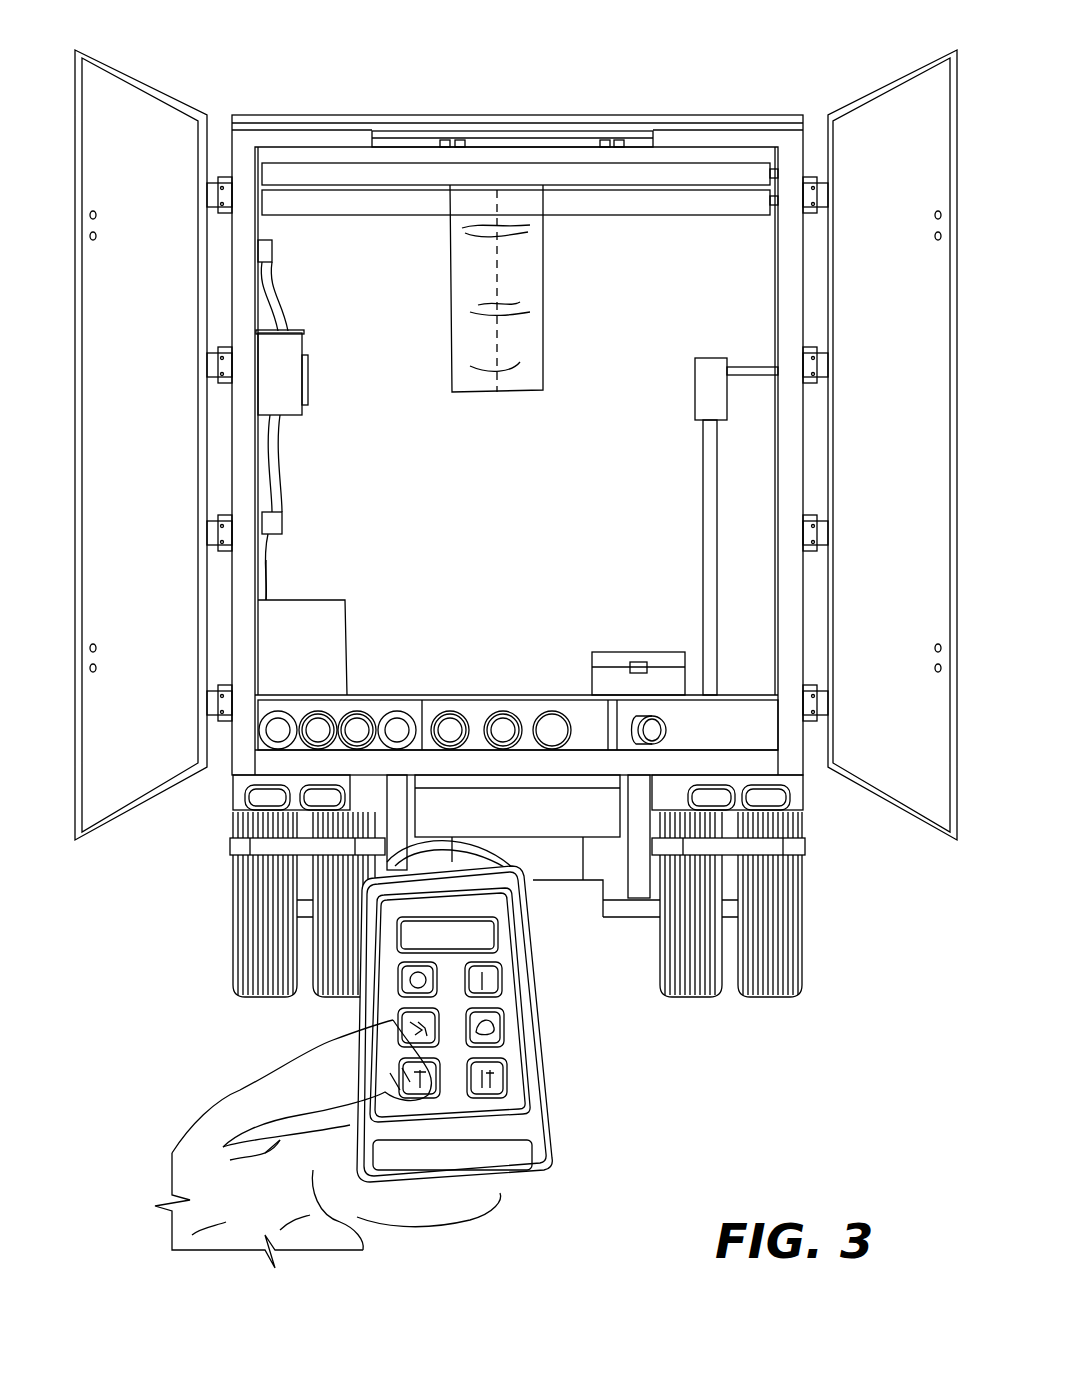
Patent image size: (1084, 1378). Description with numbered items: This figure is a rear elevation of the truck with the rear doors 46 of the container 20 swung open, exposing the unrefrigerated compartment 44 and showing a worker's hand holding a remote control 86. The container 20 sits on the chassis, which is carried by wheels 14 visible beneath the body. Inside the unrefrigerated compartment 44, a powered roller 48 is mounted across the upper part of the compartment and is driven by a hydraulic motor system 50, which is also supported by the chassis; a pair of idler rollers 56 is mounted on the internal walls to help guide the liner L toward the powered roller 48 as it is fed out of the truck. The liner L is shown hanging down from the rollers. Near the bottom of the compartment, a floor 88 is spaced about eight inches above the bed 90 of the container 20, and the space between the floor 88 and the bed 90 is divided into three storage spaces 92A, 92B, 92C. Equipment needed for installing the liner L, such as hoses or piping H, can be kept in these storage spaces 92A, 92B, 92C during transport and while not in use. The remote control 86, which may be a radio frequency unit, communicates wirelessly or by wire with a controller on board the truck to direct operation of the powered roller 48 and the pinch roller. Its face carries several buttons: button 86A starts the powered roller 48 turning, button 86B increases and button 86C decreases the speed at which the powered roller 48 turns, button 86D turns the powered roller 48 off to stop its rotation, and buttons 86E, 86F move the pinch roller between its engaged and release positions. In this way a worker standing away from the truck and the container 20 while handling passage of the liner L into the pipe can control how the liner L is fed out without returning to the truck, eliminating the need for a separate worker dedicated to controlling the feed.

The wheels 14 is at (320, 884).
The container 20 is at (443, 116).
The unrefrigerated compartment 44 is at (705, 256).
The rear doors 46 is at (878, 112).
The powered roller 48 is at (600, 218).
The hydraulic motor system 50 is at (396, 338).
The idler rollers 56 is at (340, 172).
The remote control 86 is at (425, 1079).
The button 86A is at (416, 977).
The button 86B is at (418, 1026).
The button 86C is at (500, 1016).
The button 86D is at (427, 1085).
The button 86E is at (497, 1092).
The button 86F is at (493, 968).
The floor 88 is at (584, 706).
The bed 90 is at (710, 723).
The storage space 92A is at (375, 710).
The storage space 92B is at (478, 752).
The storage space 92C is at (747, 722).
The liner L is at (528, 352).
The hoses or piping H is at (557, 707).